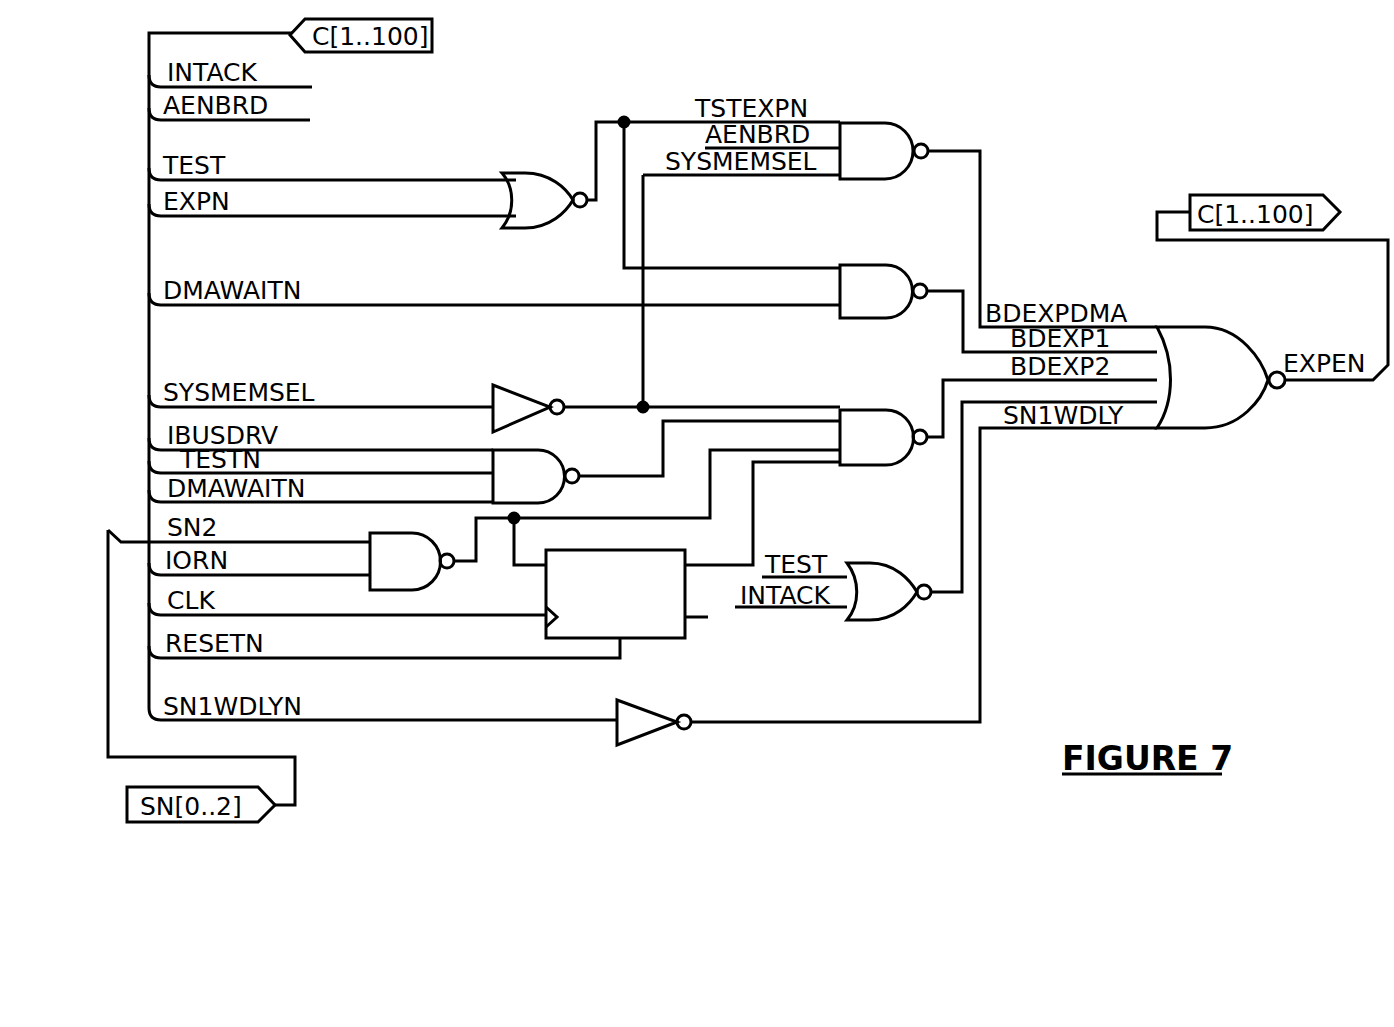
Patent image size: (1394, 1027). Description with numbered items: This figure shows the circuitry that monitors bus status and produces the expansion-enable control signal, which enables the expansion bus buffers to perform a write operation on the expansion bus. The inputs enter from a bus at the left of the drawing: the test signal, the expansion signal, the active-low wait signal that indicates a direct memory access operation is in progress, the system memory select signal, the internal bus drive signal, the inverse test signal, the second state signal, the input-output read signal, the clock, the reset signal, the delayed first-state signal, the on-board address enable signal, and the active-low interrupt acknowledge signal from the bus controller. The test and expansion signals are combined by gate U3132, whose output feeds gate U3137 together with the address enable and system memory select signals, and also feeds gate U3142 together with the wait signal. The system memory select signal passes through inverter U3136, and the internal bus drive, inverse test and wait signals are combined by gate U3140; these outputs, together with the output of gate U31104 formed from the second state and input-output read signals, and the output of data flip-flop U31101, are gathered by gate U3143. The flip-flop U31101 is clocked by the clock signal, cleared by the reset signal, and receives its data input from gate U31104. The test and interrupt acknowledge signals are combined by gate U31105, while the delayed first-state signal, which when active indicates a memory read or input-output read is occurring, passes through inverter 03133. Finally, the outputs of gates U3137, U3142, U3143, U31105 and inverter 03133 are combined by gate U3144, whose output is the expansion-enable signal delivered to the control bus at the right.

The NOR gate U3132 is at (535, 186).
The NAND gate U3137 is at (879, 136).
The NAND gate U3142 is at (881, 276).
The inverter U3136 is at (521, 394).
The NAND gate U3140 is at (547, 462).
The NAND gate U3143 is at (881, 422).
The NAND gate U31104 is at (404, 548).
The D flip-flop U31101 is at (615, 581).
The NOR gate U31105 is at (878, 607).
The inverter 03133 is at (648, 708).
The NOR gate U3144 is at (1217, 363).